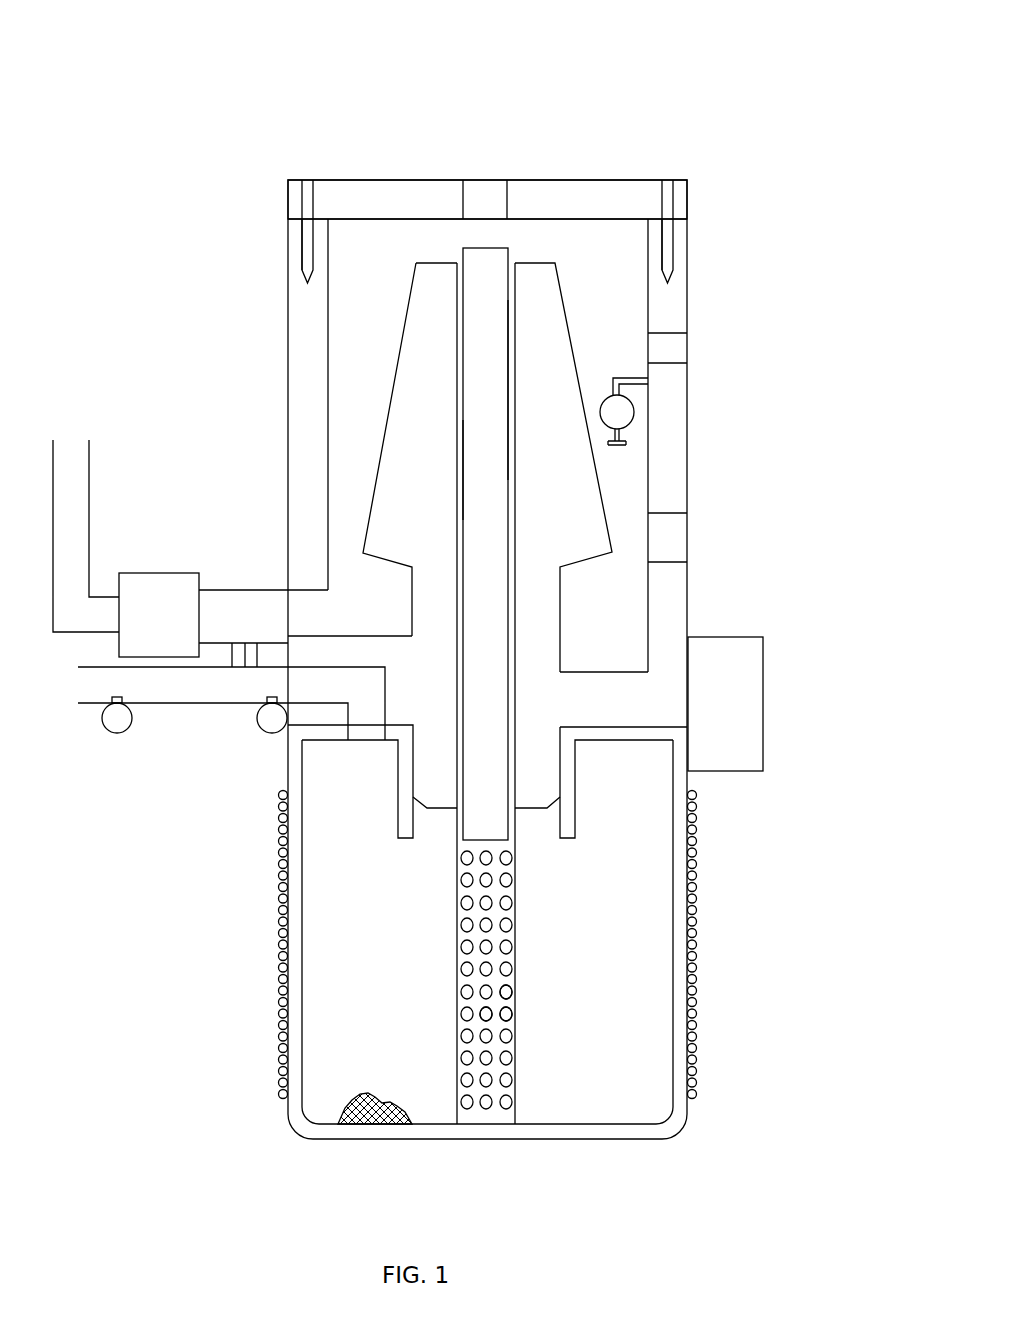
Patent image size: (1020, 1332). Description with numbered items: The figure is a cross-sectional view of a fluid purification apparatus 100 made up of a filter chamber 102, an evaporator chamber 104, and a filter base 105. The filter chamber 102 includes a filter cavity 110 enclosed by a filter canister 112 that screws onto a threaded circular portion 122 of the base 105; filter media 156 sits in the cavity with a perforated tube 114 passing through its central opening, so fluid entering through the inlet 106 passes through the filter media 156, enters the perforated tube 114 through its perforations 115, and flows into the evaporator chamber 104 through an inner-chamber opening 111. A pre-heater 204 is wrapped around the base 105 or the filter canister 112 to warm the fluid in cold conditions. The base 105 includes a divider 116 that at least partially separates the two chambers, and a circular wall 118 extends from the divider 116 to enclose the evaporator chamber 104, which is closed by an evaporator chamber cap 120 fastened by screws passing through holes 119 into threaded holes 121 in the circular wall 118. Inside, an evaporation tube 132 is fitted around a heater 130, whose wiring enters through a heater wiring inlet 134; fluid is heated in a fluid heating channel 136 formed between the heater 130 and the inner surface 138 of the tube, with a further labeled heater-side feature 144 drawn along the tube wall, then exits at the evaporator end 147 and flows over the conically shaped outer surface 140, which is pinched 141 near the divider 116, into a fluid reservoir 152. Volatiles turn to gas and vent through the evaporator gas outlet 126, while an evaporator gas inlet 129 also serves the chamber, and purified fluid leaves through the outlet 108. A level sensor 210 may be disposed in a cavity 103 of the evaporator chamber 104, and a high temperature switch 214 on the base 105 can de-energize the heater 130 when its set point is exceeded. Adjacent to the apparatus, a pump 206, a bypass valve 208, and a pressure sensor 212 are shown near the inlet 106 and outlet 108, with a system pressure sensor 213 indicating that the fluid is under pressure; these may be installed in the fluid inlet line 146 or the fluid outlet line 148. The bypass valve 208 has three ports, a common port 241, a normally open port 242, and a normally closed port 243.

The fluid purification apparatus 100 is at (178, 93).
The filter chamber 102 is at (379, 932).
The cavity 103 is at (635, 472).
The evaporator chamber 104 is at (372, 384).
The filter base 105 is at (305, 506).
The inlet 106 is at (350, 756).
The outlet 108 is at (350, 620).
The filter cavity 110 is at (379, 932).
The inner-chamber opening 111 is at (497, 845).
The filter canister 112 is at (300, 935).
The perforated tube 114 is at (495, 958).
The perforations 115 is at (506, 1014).
The divider 116 is at (688, 711).
The circular wall 118 is at (288, 335).
The holes 119 is at (307, 190).
The evaporator chamber cap 120 is at (560, 195).
The threaded holes 121 is at (308, 248).
The threaded circular portion 122 is at (538, 793).
The evaporator gas outlet 126 is at (680, 365).
The evaporator gas inlet 129 is at (676, 546).
The heater 130 is at (500, 518).
The evaporation tube 132 is at (405, 325).
The heater wiring inlet 134 is at (470, 188).
The fluid heating channel 136 is at (460, 485).
The inner surface 138 is at (515, 395).
The outer surface 140 is at (568, 318).
The pinched portion 141 is at (540, 608).
The tube middle wall 144 is at (510, 457).
The fluid inlet line 146 is at (202, 688).
The evaporator end 147 is at (460, 260).
The fluid outlet line 148 is at (78, 493).
The fluid reservoir 152 is at (604, 647).
The filter media 156 is at (362, 1122).
The pre-heater 204 is at (278, 1010).
The pump 206 is at (159, 615).
The bypass valve 208 is at (243, 616).
The level sensor 210 is at (610, 395).
The pressure sensor 212 is at (260, 730).
The system pressure sensor 213 is at (102, 725).
The high temperature switch 214 is at (725, 704).
The common port 241 is at (202, 610).
The normally open port 242 is at (245, 668).
The normally closed port 243 is at (288, 607).